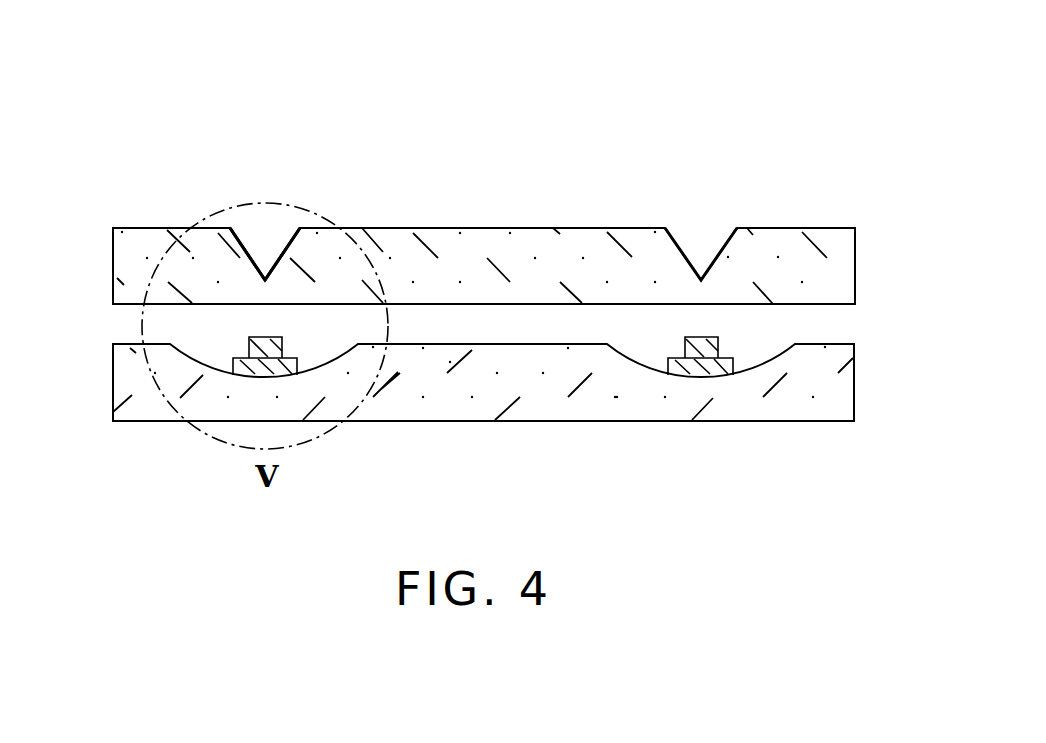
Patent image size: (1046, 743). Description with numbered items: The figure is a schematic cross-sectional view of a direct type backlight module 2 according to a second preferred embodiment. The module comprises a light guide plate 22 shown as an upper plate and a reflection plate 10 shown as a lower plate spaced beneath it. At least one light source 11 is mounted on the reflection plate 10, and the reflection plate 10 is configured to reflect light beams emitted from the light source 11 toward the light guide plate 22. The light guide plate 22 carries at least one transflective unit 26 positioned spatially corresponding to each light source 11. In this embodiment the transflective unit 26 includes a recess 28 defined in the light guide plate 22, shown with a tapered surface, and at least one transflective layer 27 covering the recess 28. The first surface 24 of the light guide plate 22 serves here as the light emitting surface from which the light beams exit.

The direct type backlight module 2 is at (528, 72).
The light guide plate 22 is at (822, 281).
The first surface 24 is at (823, 228).
The transflective unit 26 is at (51, 210).
The transflective layer 27 is at (240, 262).
The recess 28 is at (258, 250).
The reflection plate 10 is at (815, 376).
The light source 11 is at (672, 375).